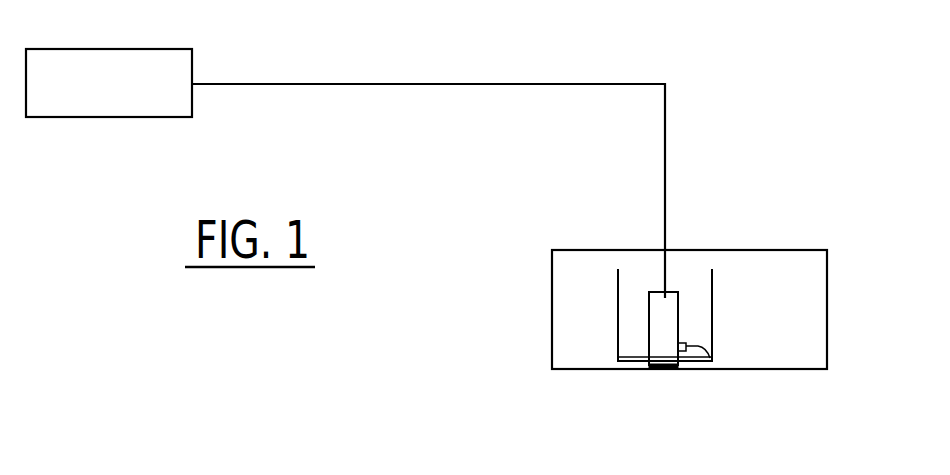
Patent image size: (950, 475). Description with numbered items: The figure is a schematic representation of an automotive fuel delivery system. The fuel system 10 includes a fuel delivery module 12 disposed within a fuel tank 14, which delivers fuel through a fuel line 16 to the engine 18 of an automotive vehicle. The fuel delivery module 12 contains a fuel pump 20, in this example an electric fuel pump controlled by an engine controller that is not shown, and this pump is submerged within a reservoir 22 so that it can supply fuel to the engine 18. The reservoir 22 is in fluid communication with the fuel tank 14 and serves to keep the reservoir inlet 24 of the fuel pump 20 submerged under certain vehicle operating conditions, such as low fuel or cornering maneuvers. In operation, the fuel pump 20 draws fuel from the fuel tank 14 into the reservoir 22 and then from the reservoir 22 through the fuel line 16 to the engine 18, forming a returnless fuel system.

The fuel system 10 is at (745, 148).
The fuel delivery module 12 is at (723, 311).
The fuel tank 14 is at (827, 283).
The fuel line 16 is at (602, 88).
The engine 18 is at (193, 63).
The fuel pump 20 is at (663, 342).
The reservoir 22 is at (618, 332).
The reservoir inlet 24 is at (703, 361).